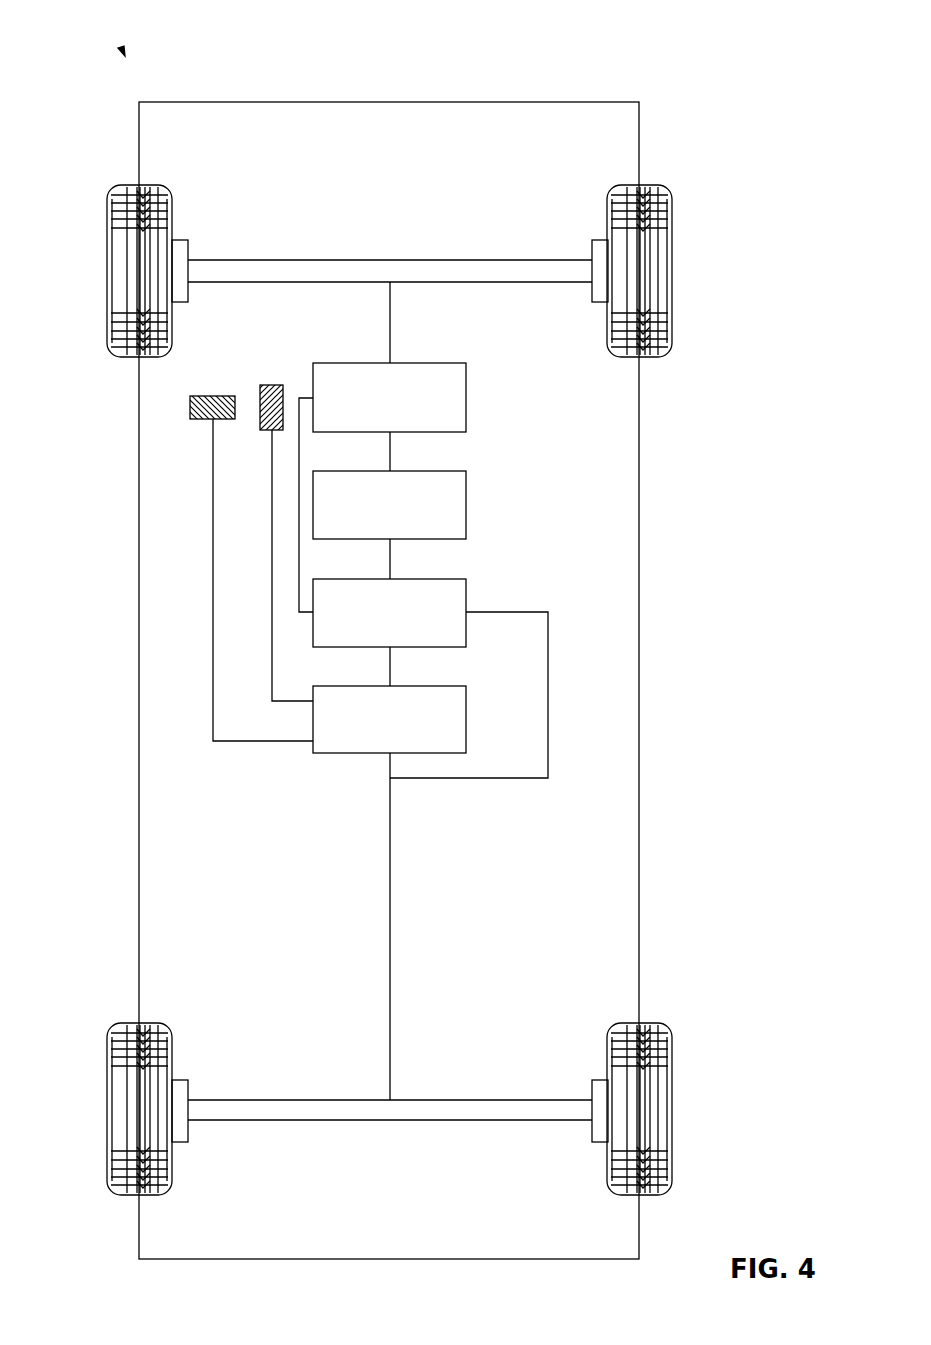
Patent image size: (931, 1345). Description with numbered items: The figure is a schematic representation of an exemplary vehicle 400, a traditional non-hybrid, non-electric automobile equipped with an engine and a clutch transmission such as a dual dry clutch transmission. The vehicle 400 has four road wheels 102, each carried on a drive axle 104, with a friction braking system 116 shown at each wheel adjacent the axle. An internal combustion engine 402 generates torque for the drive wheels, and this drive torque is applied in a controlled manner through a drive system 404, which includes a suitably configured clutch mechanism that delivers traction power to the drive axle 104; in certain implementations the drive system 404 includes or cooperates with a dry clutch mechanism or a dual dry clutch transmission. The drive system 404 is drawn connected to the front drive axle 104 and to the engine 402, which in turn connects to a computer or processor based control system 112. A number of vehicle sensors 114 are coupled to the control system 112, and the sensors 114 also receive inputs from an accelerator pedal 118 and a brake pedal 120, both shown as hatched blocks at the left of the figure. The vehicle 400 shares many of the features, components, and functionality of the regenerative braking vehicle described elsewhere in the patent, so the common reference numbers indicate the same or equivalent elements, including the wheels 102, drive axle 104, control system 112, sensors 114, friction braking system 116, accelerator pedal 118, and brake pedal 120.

The vehicle 400 is at (124, 52).
The road wheels 102 is at (107, 270).
The friction braking system 116 is at (177, 240).
The drive axle 104 is at (350, 260).
The drive system 404 is at (418, 363).
The engine 402 is at (418, 471).
The control system 112 is at (418, 579).
The vehicle sensors 114 is at (418, 686).
The accelerator pedal 118 is at (272, 385).
The brake pedal 120 is at (215, 396).